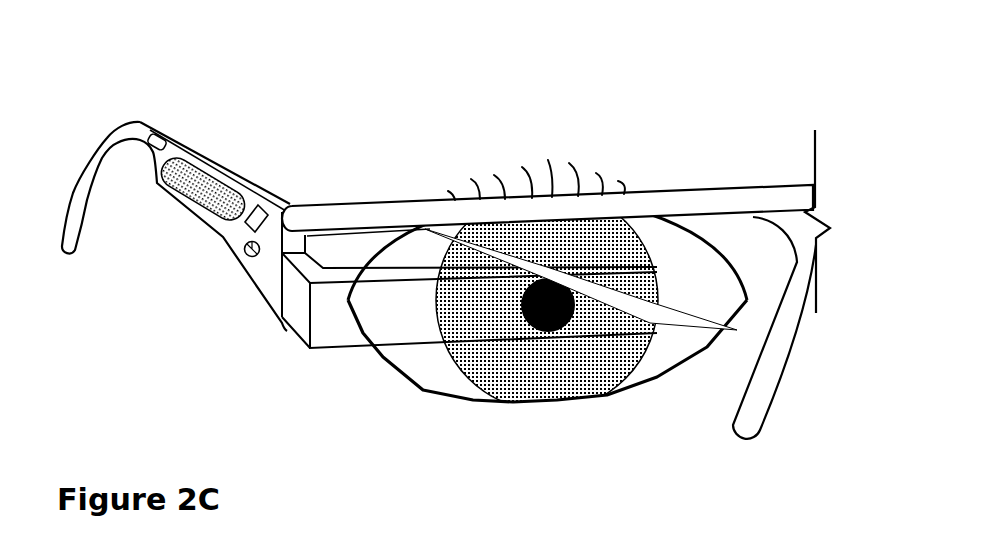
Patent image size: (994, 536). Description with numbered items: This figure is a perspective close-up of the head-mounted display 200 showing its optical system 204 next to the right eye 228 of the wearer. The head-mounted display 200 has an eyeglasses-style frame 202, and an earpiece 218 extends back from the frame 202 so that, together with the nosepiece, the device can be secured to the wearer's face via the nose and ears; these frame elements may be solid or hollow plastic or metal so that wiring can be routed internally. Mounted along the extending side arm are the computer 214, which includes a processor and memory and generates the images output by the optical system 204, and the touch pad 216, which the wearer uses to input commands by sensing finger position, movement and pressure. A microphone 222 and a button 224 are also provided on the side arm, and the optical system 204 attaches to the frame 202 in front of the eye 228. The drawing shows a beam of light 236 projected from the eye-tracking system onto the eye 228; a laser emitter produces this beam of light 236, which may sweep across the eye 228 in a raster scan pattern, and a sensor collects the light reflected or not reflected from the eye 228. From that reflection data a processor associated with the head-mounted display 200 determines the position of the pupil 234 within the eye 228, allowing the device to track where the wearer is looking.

The head-mounted display 200 is at (443, 242).
The frame 202 is at (721, 187).
The optical system 204 is at (350, 348).
The computer 214 is at (147, 122).
The touch pad 216 is at (205, 173).
The earpiece 218 is at (88, 158).
The microphone 222 is at (250, 262).
The button 224 is at (257, 188).
The eye 228 is at (507, 400).
The pupil 234 is at (598, 402).
The beam of light 236 is at (690, 330).